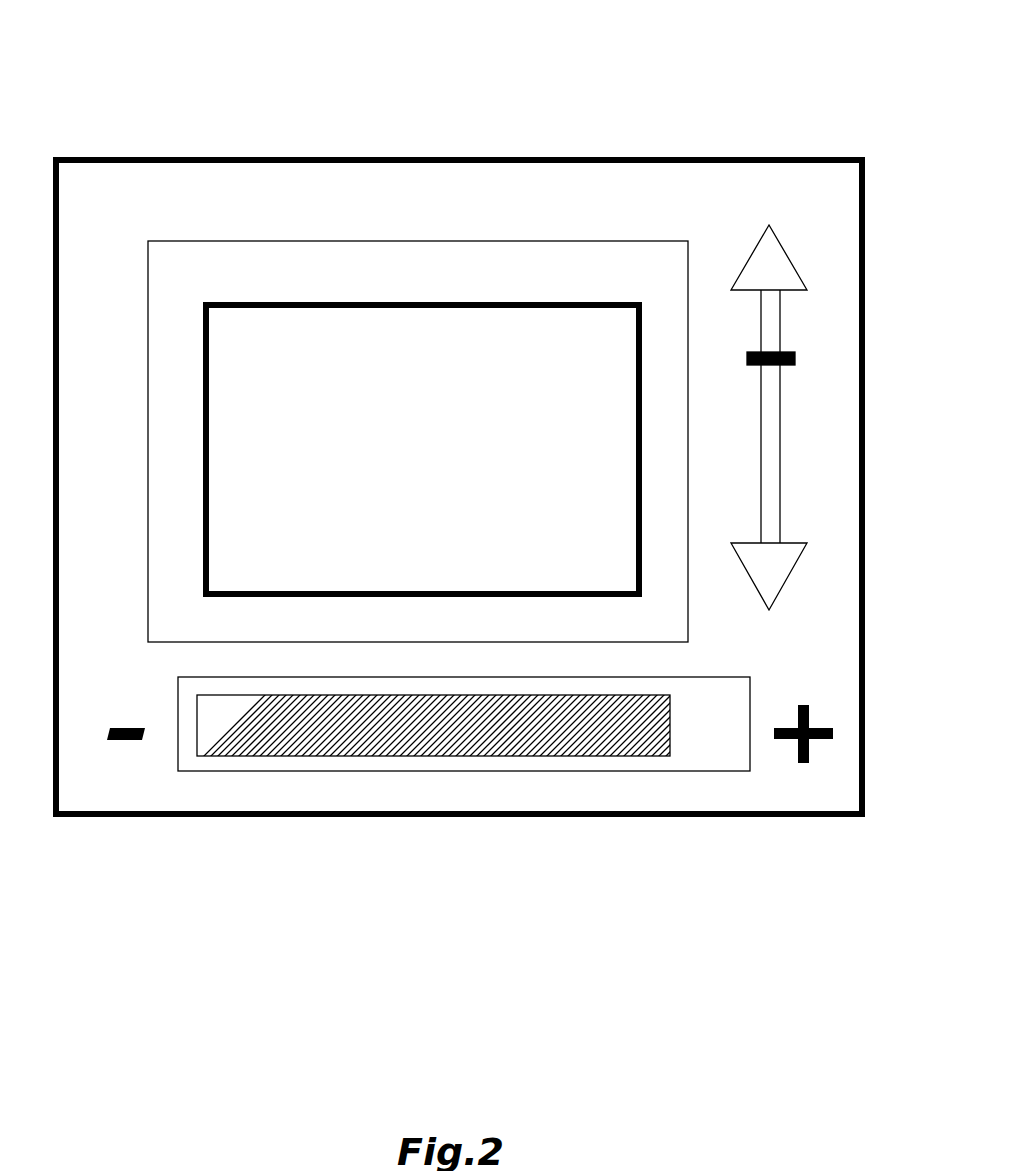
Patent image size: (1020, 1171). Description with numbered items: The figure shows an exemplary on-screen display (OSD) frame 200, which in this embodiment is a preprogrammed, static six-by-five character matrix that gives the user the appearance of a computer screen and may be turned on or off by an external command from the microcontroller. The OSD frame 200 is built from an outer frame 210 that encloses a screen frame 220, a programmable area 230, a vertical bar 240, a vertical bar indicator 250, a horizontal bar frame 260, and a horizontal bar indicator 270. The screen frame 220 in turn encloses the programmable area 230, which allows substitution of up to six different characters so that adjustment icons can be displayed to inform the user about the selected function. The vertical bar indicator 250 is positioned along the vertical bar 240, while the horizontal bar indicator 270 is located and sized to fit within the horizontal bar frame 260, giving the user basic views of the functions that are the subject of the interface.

The OSD frame 200 is at (656, 66).
The frame 210 is at (128, 157).
The screen frame 220 is at (189, 240).
The programmable area 230 is at (312, 301).
The vertical bar 240 is at (796, 404).
The vertical bar indicator 250 is at (803, 358).
The horizontal bar frame 260 is at (472, 696).
The horizontal bar indicator 270 is at (676, 736).